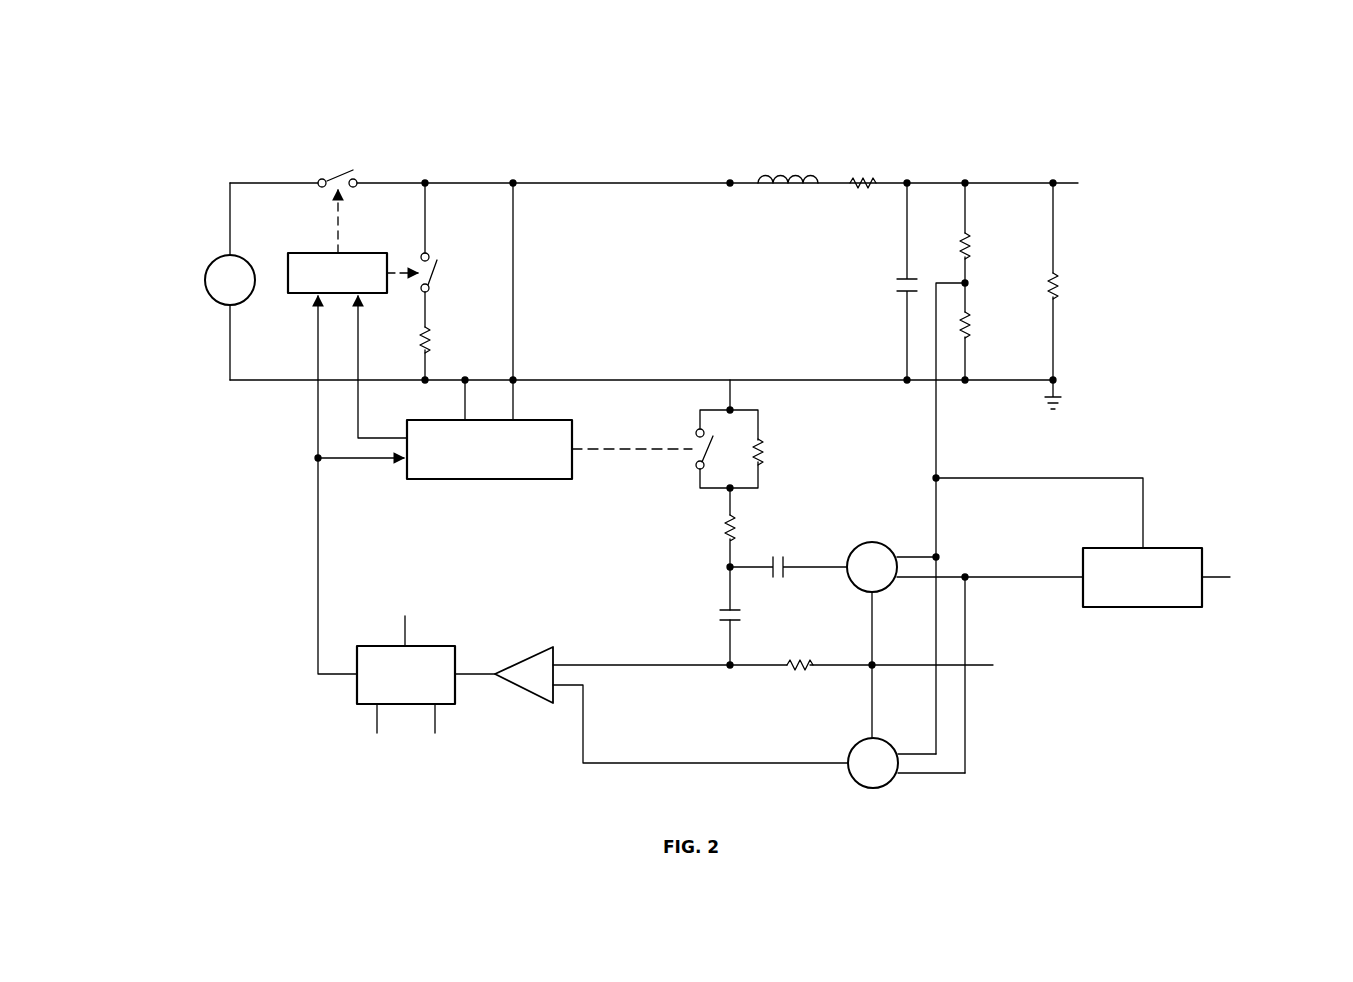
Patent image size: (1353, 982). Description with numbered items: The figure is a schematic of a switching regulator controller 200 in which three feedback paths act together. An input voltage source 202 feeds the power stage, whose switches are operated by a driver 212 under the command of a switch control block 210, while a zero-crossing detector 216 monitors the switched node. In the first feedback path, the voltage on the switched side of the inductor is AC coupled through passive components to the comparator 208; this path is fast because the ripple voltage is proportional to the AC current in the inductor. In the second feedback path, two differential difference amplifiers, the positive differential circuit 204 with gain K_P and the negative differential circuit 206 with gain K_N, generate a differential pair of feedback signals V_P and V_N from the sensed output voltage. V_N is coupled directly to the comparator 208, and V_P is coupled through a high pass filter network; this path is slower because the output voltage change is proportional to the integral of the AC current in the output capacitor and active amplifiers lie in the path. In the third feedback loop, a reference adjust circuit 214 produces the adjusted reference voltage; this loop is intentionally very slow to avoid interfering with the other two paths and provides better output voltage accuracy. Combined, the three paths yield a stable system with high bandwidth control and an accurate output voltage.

The buck converter circuit 200 is at (937, 126).
The input voltage source 202 is at (205, 280).
The positive differential circuit 204 is at (875, 543).
The negative differential circuit 206 is at (873, 788).
The comparator 208 is at (524, 692).
The switch control 210 is at (355, 690).
The driver 212 is at (313, 252).
The reference adjust circuit 214 is at (1147, 607).
The zero-crossing detector 216 is at (490, 479).